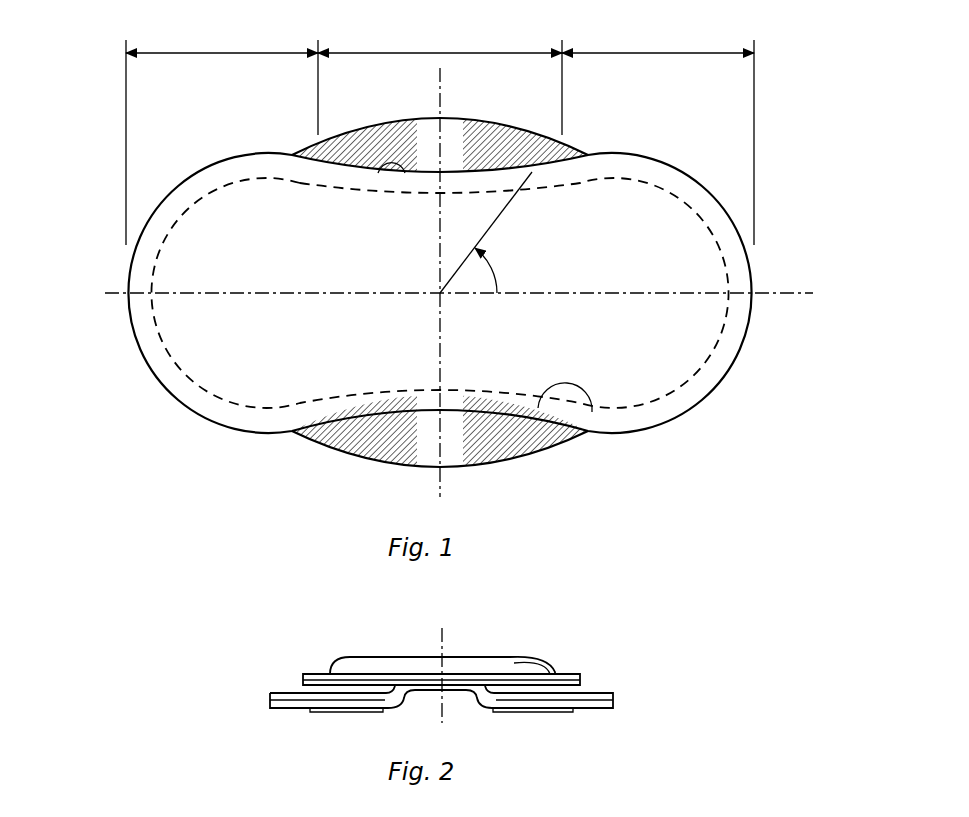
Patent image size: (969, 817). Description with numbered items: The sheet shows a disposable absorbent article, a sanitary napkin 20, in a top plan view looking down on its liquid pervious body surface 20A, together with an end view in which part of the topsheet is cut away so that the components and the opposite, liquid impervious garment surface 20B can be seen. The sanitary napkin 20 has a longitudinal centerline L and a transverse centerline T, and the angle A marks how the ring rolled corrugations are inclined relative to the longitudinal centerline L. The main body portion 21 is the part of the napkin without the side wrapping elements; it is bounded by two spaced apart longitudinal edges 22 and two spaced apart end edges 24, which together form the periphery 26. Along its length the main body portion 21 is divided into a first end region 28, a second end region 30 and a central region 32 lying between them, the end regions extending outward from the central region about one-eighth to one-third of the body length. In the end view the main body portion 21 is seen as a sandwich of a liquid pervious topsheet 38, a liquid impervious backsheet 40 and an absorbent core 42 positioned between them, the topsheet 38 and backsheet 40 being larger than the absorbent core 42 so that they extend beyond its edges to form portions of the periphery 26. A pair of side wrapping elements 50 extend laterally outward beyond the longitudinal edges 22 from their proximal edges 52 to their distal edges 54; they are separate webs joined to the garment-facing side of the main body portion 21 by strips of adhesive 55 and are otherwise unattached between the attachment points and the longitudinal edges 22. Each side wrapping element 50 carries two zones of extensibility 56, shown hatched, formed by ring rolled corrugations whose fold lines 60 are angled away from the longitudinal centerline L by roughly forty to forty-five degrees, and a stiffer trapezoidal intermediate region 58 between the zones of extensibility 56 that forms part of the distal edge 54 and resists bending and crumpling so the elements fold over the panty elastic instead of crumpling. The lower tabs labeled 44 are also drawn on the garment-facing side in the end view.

In FIG. 1, the sanitary napkin 20 is at (622, 132).
In FIG. 2, the sanitary napkin 20 is at (585, 642).
In FIG. 1, the body surface 20A is at (658, 213).
In FIG. 2, the body surface 20A is at (518, 648).
In FIG. 2, the garment surface 20B is at (543, 718).
In FIG. 1, the main body portion 21 is at (773, 251).
In FIG. 2, the main body portion 21 is at (428, 642).
In FIG. 1, the longitudinal edges 22 is at (378, 173).
In FIG. 2, the longitudinal edges 22 is at (305, 676).
In FIG. 1, the end edges 24 is at (126, 305).
In FIG. 1, the periphery 26 is at (677, 405).
In FIG. 1, the first end region 28 is at (225, 52).
In FIG. 1, the second end region 30 is at (652, 52).
In FIG. 1, the central region 32 is at (440, 52).
In FIG. 1, the topsheet 38 is at (243, 372).
In FIG. 2, the topsheet 38 is at (372, 665).
In FIG. 2, the backsheet 40 is at (582, 683).
In FIG. 1, the absorbent core 42 is at (700, 370).
In FIG. 2, the absorbent core 42 is at (548, 668).
In FIG. 2, the fastening adhesive 44 is at (318, 712).
In FIG. 1, the side wrapping elements 50 is at (452, 130).
In FIG. 2, the side wrapping elements 50 is at (618, 700).
In FIG. 1, the proximal edges 52 is at (538, 392).
In FIG. 1, the distal edges 54 is at (430, 468).
In FIG. 2, the strips of adhesive 55 is at (378, 690).
In FIG. 1, the zones of extensibility 56 is at (315, 438).
In FIG. 1, the intermediate region 58 is at (432, 140).
In FIG. 1, the fold lines 60 is at (350, 450).
In FIG. 1, the longitudinal centerline L is at (793, 296).
In FIG. 2, the longitudinal centerline L is at (446, 636).
In FIG. 1, the transverse centerline T is at (444, 80).
In FIG. 1, the angle A is at (493, 263).